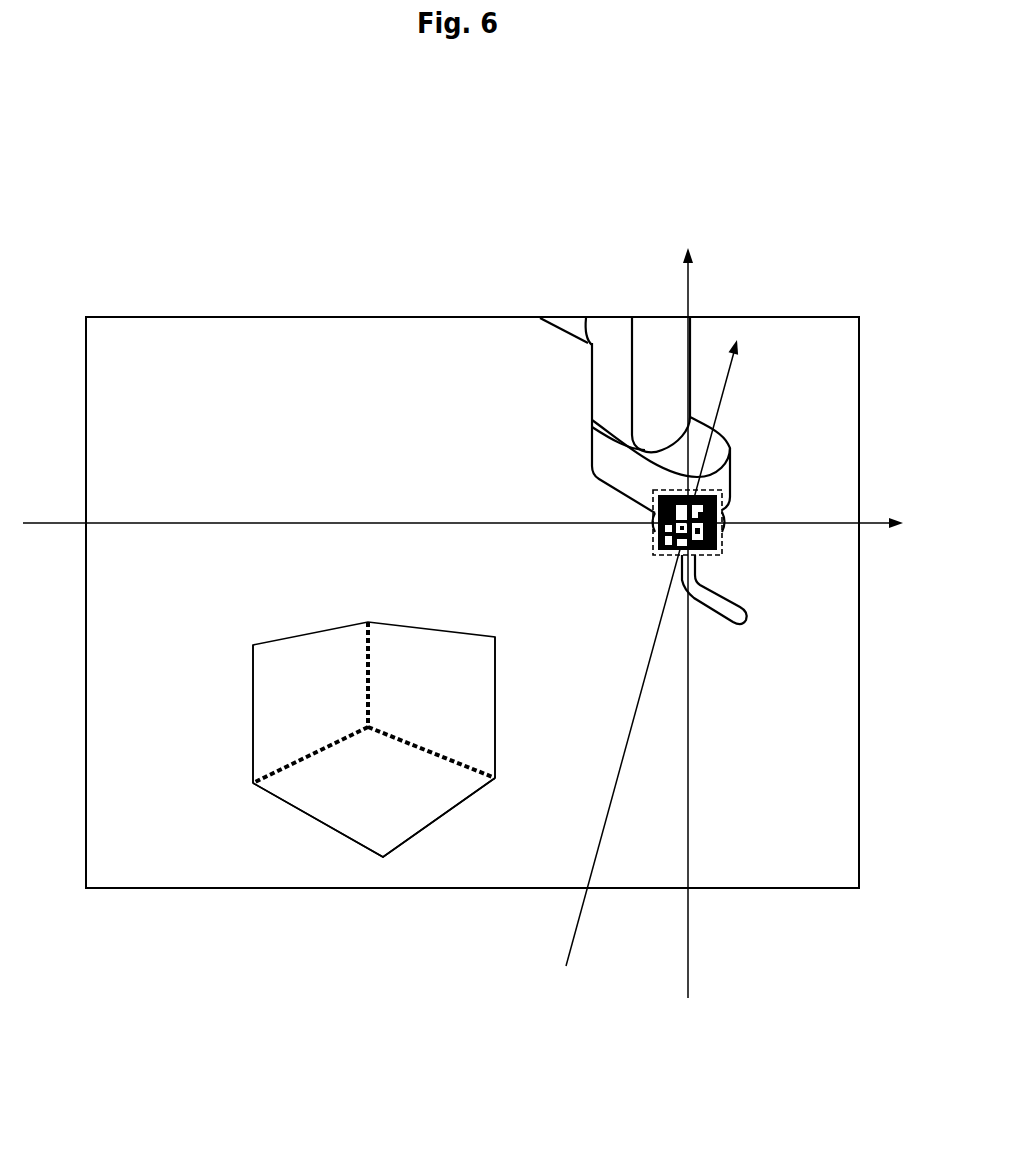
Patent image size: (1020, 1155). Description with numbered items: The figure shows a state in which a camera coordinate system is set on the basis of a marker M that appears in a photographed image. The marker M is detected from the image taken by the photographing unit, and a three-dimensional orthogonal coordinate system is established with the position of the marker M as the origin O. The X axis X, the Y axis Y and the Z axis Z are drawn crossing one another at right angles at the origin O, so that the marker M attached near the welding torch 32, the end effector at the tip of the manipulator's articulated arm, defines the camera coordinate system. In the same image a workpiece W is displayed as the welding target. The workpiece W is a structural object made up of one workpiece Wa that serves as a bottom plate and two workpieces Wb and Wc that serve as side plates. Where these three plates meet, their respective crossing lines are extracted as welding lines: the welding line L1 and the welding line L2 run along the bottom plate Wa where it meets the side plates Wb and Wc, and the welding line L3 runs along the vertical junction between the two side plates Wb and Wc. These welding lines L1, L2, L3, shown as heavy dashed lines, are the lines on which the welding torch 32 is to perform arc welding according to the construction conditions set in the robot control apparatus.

The welding torch 32 is at (720, 483).
The marker M is at (655, 541).
The origin O is at (688, 523).
The workpiece W is at (322, 628).
The workpiece serving as a bottom plate Wa is at (400, 813).
The workpiece serving as a side plate Wb is at (270, 710).
The workpiece serving as a side plate Wc is at (465, 705).
The welding line L1 is at (310, 759).
The welding line L2 is at (431, 759).
The welding line L3 is at (353, 674).
The X axis X is at (473, 522).
The Y axis Y is at (660, 645).
The Z axis Z is at (686, 608).